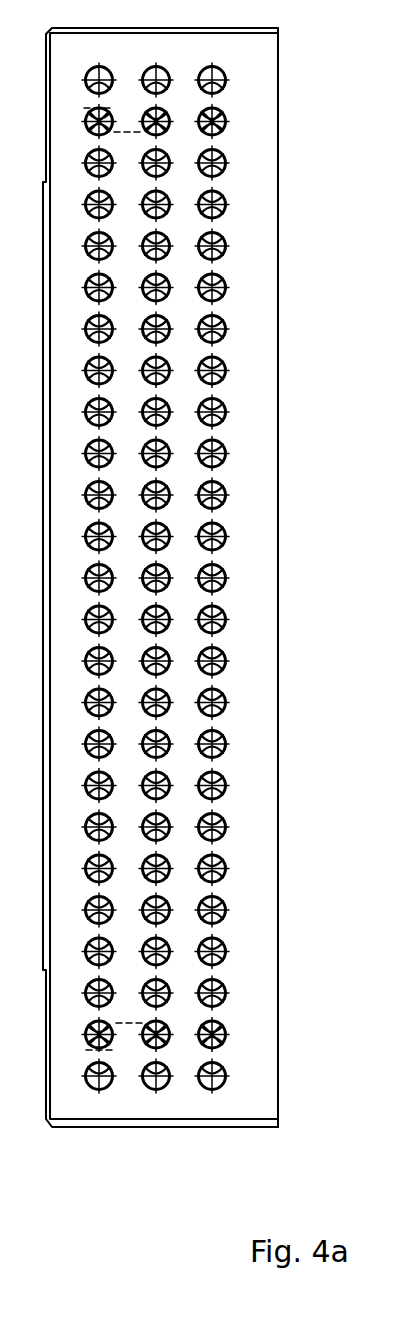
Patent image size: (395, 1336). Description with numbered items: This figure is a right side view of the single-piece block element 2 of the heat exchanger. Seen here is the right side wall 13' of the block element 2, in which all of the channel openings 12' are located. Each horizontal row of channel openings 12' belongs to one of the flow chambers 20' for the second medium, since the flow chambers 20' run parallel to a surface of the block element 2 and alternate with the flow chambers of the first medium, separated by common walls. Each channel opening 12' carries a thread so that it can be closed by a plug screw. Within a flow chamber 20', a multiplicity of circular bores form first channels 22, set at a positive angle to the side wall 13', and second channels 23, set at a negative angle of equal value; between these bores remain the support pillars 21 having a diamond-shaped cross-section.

The block element 2 is at (278, 80).
The channel openings 12' is at (211, 557).
The support pillars 21 is at (227, 367).
The second channels 23 is at (221, 522).
The first channels 22 is at (221, 552).
The right side wall 13' is at (300, 577).
The flow chambers 20' is at (155, 1145).